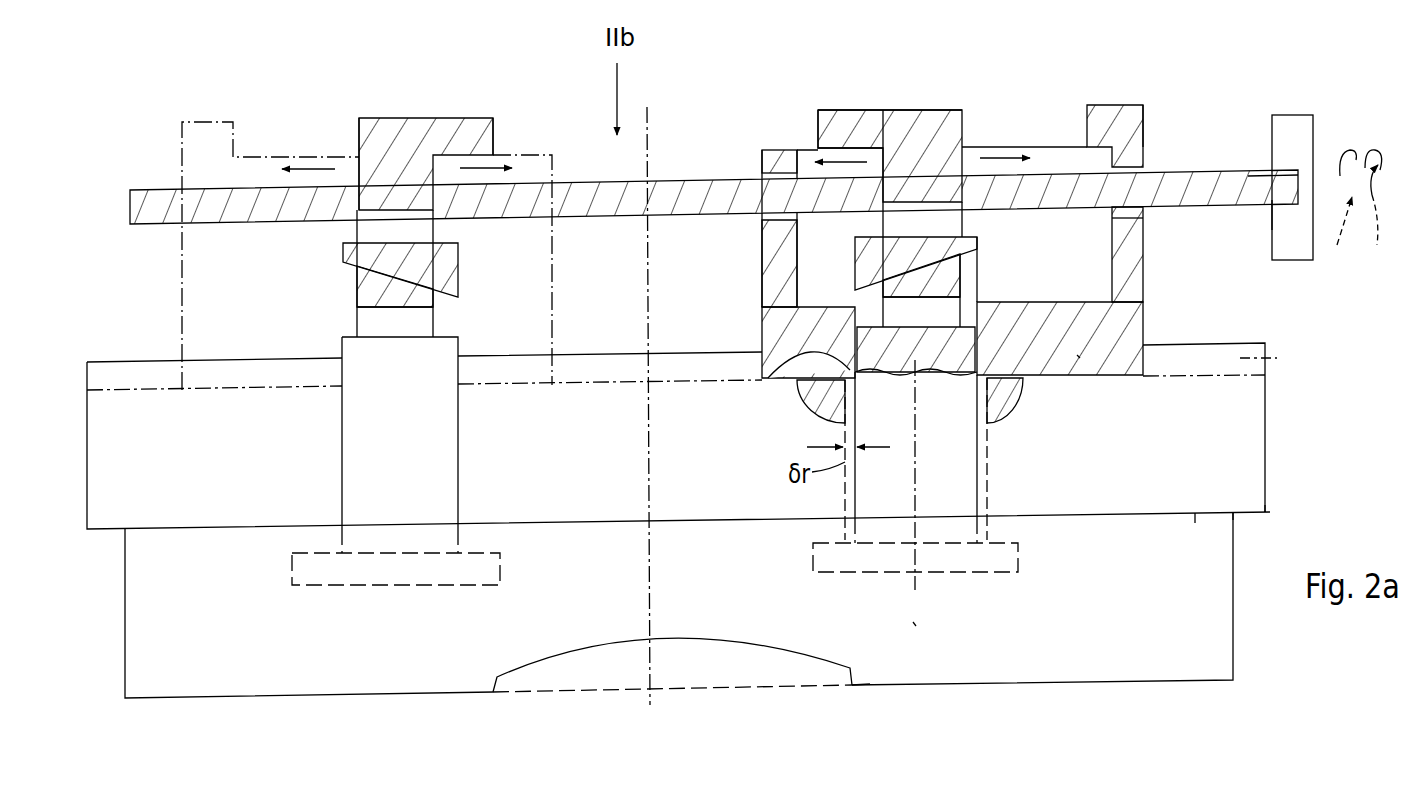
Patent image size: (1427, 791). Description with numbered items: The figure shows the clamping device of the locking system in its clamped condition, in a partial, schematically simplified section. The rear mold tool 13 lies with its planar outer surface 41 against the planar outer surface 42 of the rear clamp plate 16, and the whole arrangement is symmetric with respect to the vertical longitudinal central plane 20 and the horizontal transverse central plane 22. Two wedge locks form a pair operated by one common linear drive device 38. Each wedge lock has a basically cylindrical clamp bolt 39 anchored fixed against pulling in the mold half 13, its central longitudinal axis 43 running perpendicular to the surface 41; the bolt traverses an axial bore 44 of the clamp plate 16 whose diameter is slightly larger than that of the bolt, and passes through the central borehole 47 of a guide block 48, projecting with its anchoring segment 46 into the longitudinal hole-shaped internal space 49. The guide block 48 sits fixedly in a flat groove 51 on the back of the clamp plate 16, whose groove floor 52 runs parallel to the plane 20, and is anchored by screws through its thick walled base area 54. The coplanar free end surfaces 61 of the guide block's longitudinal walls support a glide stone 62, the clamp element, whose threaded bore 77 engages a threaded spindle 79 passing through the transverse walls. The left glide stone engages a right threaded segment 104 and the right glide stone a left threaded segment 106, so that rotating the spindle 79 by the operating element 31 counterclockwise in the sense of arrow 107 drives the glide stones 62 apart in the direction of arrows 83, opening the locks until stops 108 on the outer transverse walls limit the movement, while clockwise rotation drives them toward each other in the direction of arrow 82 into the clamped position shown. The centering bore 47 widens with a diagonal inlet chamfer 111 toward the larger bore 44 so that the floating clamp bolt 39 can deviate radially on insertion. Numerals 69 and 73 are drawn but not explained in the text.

The rear mold tool 13 is at (1233, 640).
The rear clamp plate 16 is at (1265, 420).
The vertical longitudinal central plane 20 is at (820, 690).
The horizontal transverse central plane 22 is at (650, 700).
The operating element 31 is at (1300, 140).
The linear drive device 38 is at (1305, 113).
The clamp bolt 39 is at (978, 445).
The planar outer surface of the mold half 41 is at (1197, 522).
The planar outer surface of the rear clamp plate 42 is at (1247, 505).
The central longitudinal axis 43 is at (913, 622).
The axial bore 44 is at (990, 485).
The anchoring segment 46 is at (945, 233).
The central borehole 47 is at (972, 303).
The guide block 48 is at (1150, 301).
The internal space 49 is at (1093, 231).
The flat groove 51 is at (1240, 345).
The groove floor 52 is at (1195, 378).
The thick walled base area 54 is at (1077, 355).
The free end surfaces 61 is at (1005, 147).
The glide stone 62 is at (402, 114).
The collar 69 is at (840, 108).
The flange 73 is at (815, 133).
The threaded bore 77 is at (373, 137).
The threaded spindle 79 is at (1215, 170).
The arrow 82 is at (838, 165).
The arrow 83 is at (310, 160).
The right threaded segment 104 is at (468, 200).
The left threaded segment 106 is at (1248, 177).
The directional arrow 107 is at (1330, 260).
The stop 108 is at (187, 118).
The diagonal inlet chamfer 111 is at (782, 380).